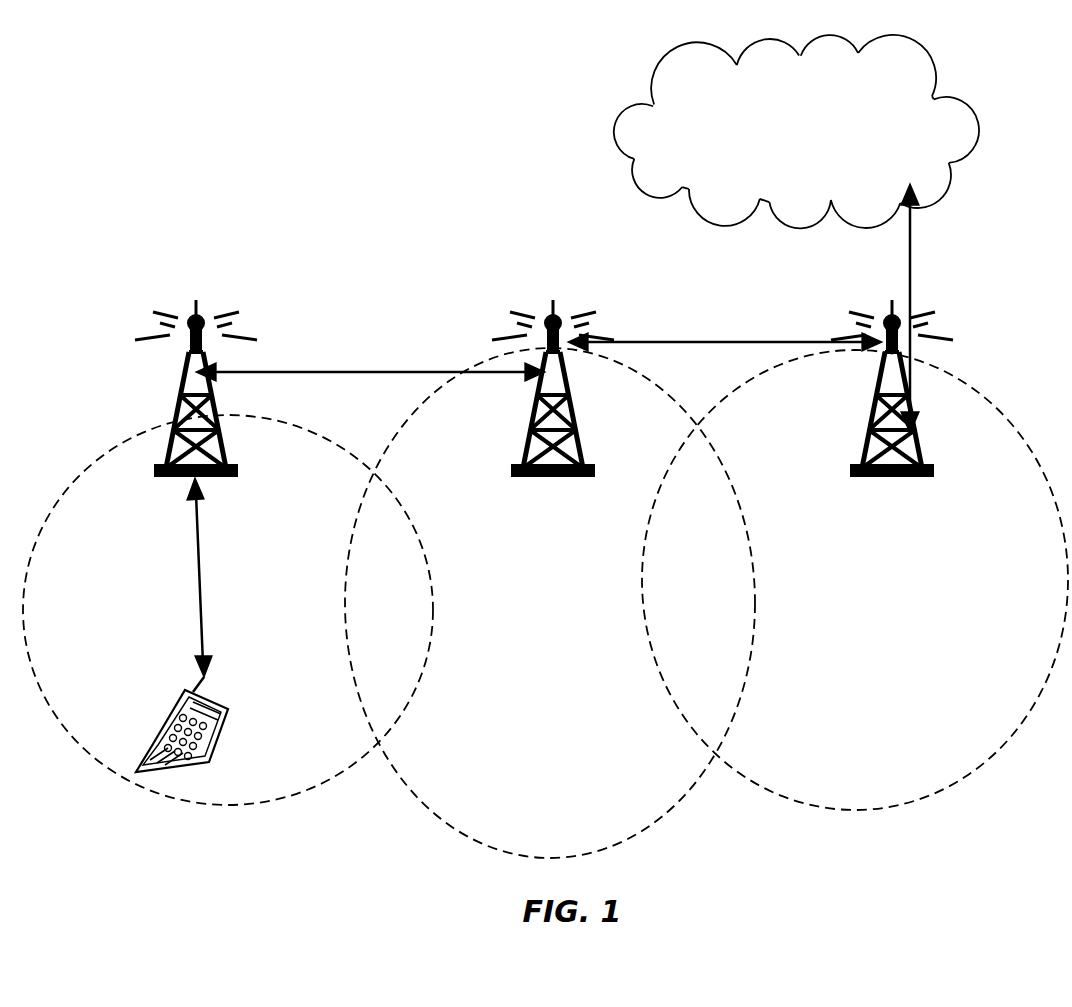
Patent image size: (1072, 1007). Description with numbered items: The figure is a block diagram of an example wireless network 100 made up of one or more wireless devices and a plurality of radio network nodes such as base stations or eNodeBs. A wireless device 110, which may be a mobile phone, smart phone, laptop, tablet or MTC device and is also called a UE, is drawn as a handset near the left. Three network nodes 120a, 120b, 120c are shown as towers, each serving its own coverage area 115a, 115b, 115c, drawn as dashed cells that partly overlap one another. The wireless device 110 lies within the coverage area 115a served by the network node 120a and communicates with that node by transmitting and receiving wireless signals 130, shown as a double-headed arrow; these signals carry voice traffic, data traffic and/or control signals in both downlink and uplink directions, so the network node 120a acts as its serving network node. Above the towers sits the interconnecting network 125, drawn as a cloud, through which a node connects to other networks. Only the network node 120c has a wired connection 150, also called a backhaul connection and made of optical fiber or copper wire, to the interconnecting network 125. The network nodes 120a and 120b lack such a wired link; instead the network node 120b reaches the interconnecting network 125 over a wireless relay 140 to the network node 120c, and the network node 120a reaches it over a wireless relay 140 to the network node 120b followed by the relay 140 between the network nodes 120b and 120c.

The wireless network 100 is at (323, 208).
The wireless device 110 is at (148, 748).
The coverage area 115a is at (228, 610).
The coverage area 115b is at (550, 603).
The coverage area 115c is at (855, 580).
The network node 120a is at (176, 408).
The network node 120b is at (636, 420).
The network node 120c is at (922, 458).
The interconnecting network 125 is at (776, 170).
The wireless signals 130 is at (180, 585).
The wireless relay 140 is at (539, 344).
The wired connection 150 is at (934, 308).